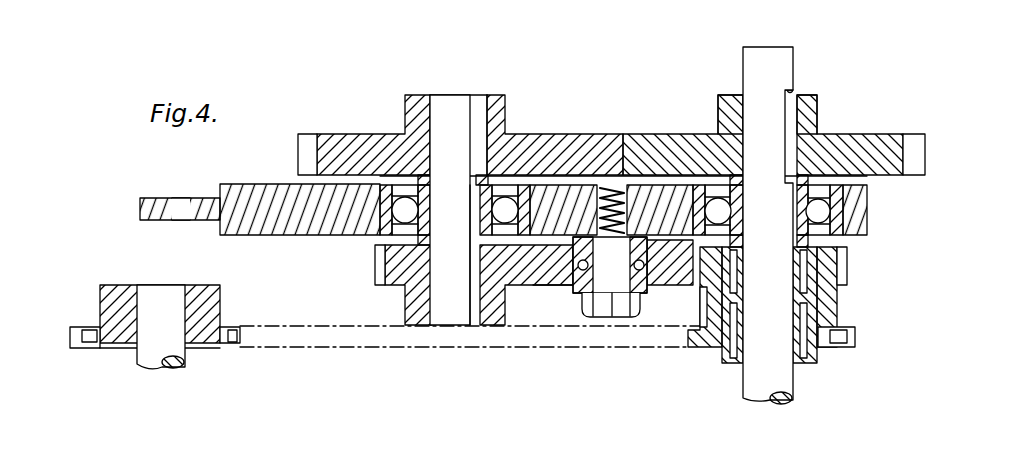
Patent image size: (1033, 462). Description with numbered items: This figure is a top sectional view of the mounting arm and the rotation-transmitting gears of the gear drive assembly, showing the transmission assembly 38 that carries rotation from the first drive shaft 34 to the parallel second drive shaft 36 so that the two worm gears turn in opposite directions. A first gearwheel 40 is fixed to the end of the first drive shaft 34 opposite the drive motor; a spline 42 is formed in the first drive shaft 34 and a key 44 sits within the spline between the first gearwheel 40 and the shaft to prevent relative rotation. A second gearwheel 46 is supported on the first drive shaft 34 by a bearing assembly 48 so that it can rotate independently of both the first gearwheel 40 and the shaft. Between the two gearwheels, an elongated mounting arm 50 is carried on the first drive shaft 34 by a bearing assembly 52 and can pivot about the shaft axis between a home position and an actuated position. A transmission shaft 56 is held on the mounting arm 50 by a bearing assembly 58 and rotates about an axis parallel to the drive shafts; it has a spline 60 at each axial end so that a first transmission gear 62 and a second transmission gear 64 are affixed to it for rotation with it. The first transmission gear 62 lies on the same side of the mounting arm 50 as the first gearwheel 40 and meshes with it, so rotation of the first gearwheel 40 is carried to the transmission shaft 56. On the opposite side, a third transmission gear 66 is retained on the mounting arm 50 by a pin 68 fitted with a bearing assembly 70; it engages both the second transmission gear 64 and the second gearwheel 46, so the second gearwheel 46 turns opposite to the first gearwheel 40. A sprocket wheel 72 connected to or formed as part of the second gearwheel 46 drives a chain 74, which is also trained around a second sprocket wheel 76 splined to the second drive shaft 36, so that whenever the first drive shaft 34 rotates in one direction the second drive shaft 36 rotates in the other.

The first drive shaft 34 is at (752, 378).
The second drive shaft 36 is at (145, 348).
The transmission assembly 38 is at (629, 95).
The first gearwheel 40 is at (863, 150).
The spline 42 is at (792, 90).
The key 44 is at (797, 118).
The second gearwheel 46 is at (842, 276).
The bearing assembly 48 is at (817, 298).
The mounting arm 50 is at (250, 181).
The bearing assembly 52 is at (867, 225).
The transmission shaft 56 is at (447, 108).
The bearing assembly 58 is at (377, 220).
The spline 60 is at (450, 210).
The first transmission gear 62 is at (545, 147).
The second transmission gear 64 is at (410, 303).
The third transmission gear 66 is at (556, 284).
The pin 68 is at (612, 285).
The bearing assembly 70 is at (570, 294).
The sprocket wheel 72 is at (833, 340).
The chain 74 is at (600, 340).
The second sprocket wheel 76 is at (215, 315).